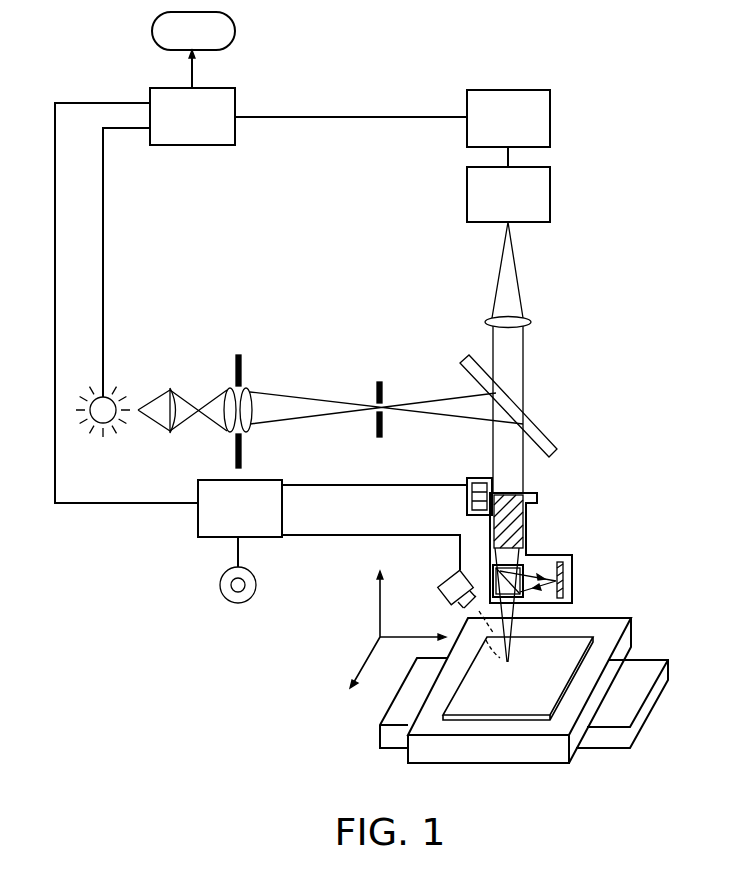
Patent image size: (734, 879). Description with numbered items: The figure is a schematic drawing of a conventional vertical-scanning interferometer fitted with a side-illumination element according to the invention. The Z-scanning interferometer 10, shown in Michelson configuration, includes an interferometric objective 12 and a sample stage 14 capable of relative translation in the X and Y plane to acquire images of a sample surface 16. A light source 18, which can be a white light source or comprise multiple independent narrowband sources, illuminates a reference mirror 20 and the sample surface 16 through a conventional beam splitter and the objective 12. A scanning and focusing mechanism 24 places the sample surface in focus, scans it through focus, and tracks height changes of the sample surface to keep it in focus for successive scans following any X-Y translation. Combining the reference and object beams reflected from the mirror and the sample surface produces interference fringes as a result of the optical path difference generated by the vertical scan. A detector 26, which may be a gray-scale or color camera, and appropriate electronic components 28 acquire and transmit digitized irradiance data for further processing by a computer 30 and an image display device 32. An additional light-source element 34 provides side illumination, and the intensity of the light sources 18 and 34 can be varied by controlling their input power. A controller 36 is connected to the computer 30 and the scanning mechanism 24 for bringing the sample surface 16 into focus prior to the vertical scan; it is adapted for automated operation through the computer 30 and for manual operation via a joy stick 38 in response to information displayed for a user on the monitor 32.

The Z-scanning interferometer 10 is at (588, 360).
The interferometric objective 12 is at (540, 521).
The sample stage 14 is at (606, 677).
The sample surface 16 is at (600, 632).
The light source 18 is at (122, 392).
The reference mirror 20 is at (572, 598).
The scanning and focusing mechanism 24 is at (467, 500).
The detector 26 is at (467, 190).
The electronic components 28 is at (548, 130).
The computer 30 is at (228, 103).
The image display device 32 is at (217, 35).
The light-source element 34 is at (446, 579).
The controller 36 is at (212, 527).
The joy stick 38 is at (250, 590).